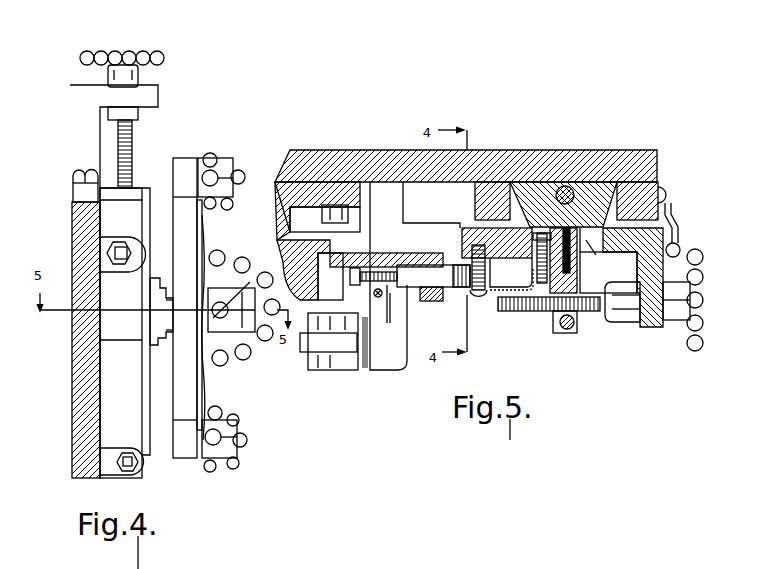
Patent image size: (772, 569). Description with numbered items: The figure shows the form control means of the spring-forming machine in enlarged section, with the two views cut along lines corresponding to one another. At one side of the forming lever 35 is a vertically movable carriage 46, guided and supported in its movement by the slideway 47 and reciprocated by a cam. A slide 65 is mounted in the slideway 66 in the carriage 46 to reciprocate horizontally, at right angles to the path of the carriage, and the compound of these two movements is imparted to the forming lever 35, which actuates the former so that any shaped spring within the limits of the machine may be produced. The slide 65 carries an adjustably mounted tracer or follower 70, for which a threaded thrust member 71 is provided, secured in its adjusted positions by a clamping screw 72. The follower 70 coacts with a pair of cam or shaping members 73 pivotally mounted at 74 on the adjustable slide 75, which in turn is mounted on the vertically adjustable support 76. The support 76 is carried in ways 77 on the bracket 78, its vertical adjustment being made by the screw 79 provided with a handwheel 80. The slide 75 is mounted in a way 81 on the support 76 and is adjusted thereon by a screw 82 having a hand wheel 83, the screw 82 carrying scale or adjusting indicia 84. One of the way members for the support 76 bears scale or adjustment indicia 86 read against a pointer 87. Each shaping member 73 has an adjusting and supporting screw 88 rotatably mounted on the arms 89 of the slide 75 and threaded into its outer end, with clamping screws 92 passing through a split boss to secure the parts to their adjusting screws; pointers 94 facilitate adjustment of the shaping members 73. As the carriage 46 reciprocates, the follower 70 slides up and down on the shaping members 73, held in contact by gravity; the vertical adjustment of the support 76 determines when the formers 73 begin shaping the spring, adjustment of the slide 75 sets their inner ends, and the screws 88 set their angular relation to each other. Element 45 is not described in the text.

In FIG. 5, the forming lever 35 is at (323, 348).
In FIG. 5, the support plate 45 is at (378, 362).
In FIG. 5, the carriage 46 is at (293, 182).
In FIG. 5, the slideway 47 is at (342, 182).
In FIG. 5, the slide 65 is at (383, 253).
In FIG. 4, the slideway 66 is at (283, 224).
In FIG. 5, the follower 70 is at (455, 288).
In FIG. 5, the thrust member 71 is at (393, 314).
In FIG. 5, the clamping screw 72 is at (374, 295).
In FIG. 4, the shaping members 73 is at (186, 230).
In FIG. 4, the pivot 74 is at (227, 345).
In FIG. 5, the pivot 74 is at (480, 292).
In FIG. 4, the adjustable slide 75 is at (157, 320).
In FIG. 5, the adjustable slide 75 is at (497, 259).
In FIG. 4, the vertically adjustable support 76 is at (146, 190).
In FIG. 5, the vertically adjustable support 76 is at (603, 180).
In FIG. 4, the ways 77 is at (118, 352).
In FIG. 5, the ways 77 is at (494, 190).
In FIG. 4, the bracket 78 is at (72, 222).
In FIG. 5, the bracket 78 is at (542, 160).
In FIG. 4, the screw 79 is at (132, 138).
In FIG. 5, the screw 79 is at (569, 188).
In FIG. 4, the handwheel 80 is at (160, 58).
In FIG. 4, the way 81 is at (158, 347).
In FIG. 5, the way 81 is at (608, 260).
In FIG. 4, the screw 82 is at (247, 276).
In FIG. 5, the screw 82 is at (594, 314).
In FIG. 4, the hand wheel 83 is at (265, 340).
In FIG. 5, the hand wheel 83 is at (696, 352).
In FIG. 5, the adjusting indicia 84 is at (630, 320).
In FIG. 5, the adjustment indicia 86 is at (667, 196).
In FIG. 5, the pointer 87 is at (679, 218).
In FIG. 4, the adjusting screw 88 is at (212, 170).
In FIG. 4, the arms 89 is at (185, 160).
In FIG. 4, the clamping screws 92 is at (237, 172).
In FIG. 4, the pointers 94 is at (207, 225).